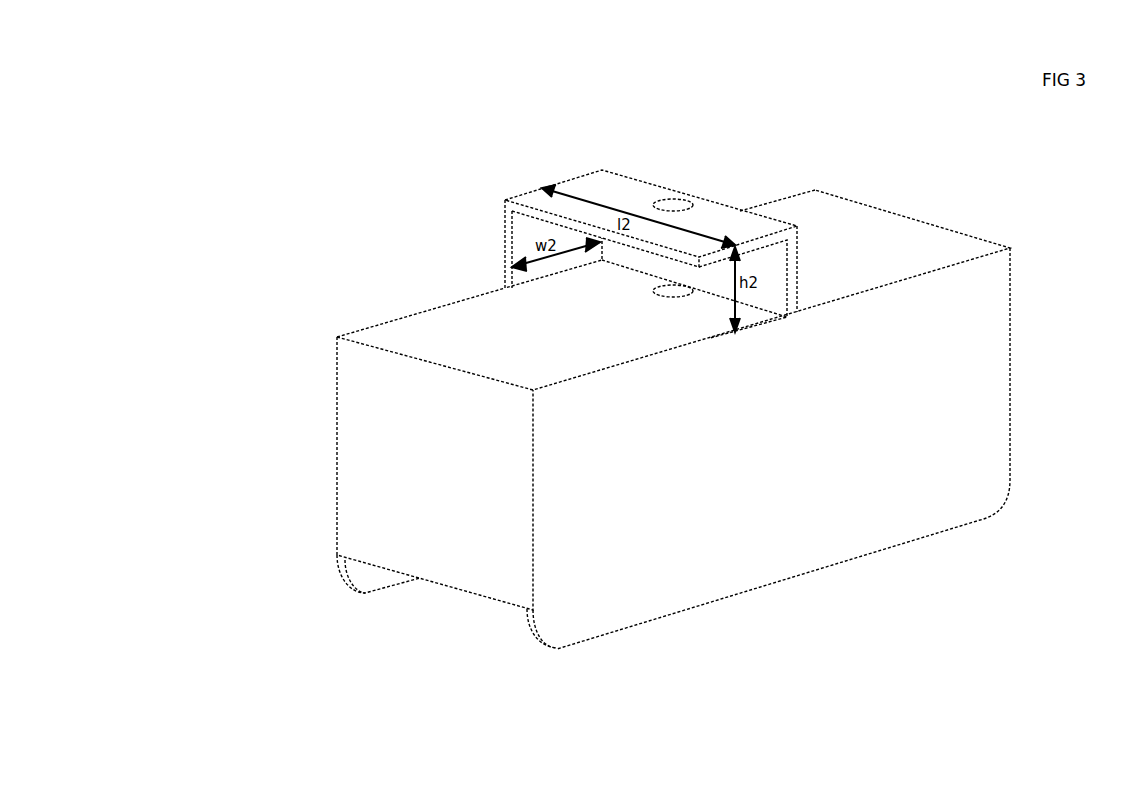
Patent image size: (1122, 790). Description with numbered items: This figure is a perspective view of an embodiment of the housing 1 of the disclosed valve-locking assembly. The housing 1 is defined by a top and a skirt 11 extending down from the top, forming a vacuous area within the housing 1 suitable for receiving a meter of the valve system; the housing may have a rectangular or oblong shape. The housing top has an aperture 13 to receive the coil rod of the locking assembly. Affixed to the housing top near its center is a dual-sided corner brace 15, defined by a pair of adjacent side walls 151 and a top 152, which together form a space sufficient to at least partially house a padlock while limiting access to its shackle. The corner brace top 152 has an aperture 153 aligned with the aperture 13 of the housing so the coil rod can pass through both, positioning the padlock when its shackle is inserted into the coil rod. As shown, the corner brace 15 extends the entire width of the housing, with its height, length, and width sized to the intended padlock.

The housing 1 is at (657, 393).
The skirt 11 is at (378, 488).
The aperture 13 is at (667, 292).
The dual-sided corner brace 15 is at (712, 213).
The side walls 151 is at (505, 228).
The top 152 is at (600, 180).
The aperture 153 is at (674, 203).